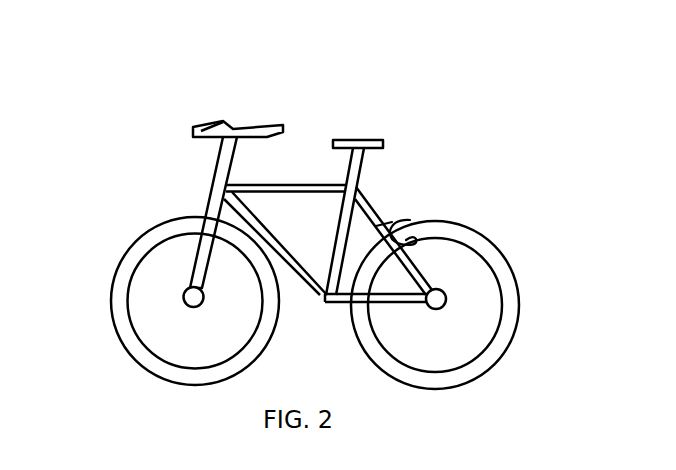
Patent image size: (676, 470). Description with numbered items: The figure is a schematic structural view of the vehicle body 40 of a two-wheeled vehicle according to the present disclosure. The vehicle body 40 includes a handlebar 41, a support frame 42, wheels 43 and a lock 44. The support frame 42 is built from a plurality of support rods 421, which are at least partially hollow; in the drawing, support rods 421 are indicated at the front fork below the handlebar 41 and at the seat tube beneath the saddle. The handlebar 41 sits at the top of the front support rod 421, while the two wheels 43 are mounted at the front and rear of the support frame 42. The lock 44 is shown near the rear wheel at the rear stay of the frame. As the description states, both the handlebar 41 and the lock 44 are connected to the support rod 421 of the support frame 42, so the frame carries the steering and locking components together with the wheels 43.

The vehicle body 40 is at (252, 73).
The handlebar 41 is at (193, 128).
The support frame 42 is at (197, 176).
The support rod 421 is at (208, 203).
The wheels 43 is at (137, 240).
The lock 44 is at (399, 222).